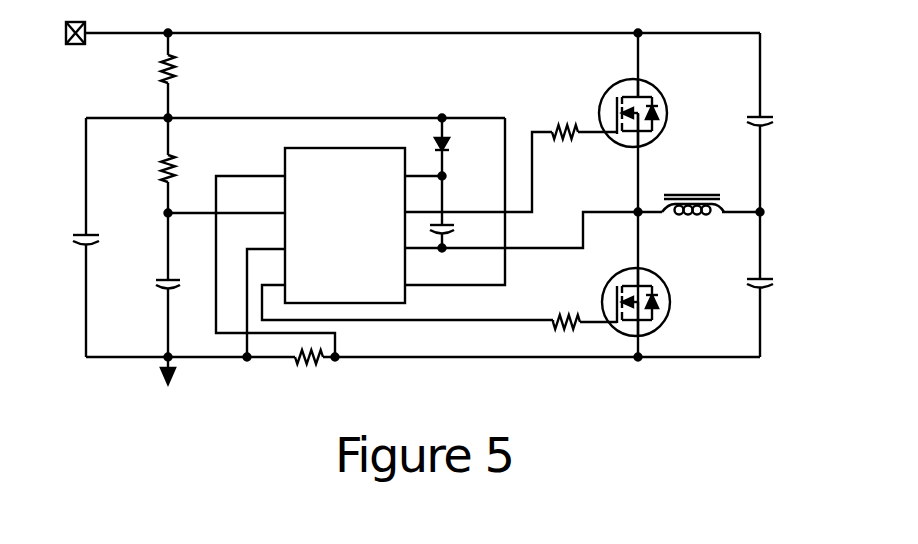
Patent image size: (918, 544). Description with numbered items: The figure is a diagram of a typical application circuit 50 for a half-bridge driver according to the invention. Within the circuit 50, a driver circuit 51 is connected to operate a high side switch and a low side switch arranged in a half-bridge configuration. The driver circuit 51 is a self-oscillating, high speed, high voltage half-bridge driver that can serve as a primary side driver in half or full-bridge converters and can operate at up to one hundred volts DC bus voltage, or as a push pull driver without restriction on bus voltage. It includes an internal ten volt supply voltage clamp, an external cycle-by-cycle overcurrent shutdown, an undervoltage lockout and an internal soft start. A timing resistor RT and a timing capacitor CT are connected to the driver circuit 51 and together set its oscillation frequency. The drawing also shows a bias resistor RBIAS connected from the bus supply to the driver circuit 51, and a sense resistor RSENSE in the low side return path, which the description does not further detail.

The circuit 50 is at (448, 395).
The driver circuit 51 is at (342, 148).
The bias resistor RBIAS is at (128, 71).
The timing resistor RT is at (148, 170).
The timing capacitor CT is at (151, 284).
The current sense resistor RSENSE is at (307, 371).